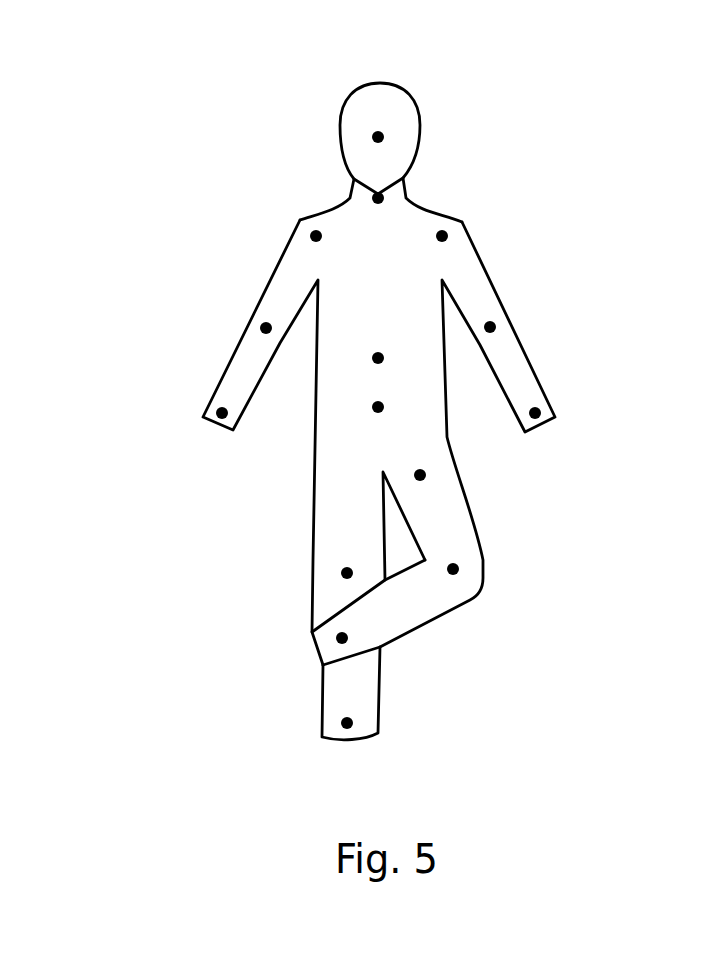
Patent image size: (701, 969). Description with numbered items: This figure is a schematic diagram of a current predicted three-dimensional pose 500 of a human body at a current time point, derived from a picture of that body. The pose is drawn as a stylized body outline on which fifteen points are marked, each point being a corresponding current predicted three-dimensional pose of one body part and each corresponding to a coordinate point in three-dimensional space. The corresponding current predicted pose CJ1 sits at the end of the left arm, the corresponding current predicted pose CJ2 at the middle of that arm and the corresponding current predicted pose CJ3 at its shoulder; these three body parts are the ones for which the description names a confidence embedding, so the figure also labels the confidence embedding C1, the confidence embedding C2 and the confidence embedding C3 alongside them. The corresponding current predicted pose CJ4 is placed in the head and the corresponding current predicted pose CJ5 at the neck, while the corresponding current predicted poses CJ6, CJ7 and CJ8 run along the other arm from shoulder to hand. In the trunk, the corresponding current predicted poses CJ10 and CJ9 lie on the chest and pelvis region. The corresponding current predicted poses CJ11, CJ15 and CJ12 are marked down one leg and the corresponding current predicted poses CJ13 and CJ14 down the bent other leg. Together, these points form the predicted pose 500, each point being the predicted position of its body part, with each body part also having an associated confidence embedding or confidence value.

The current predicted 3D pose 500 is at (162, 66).
The corresponding current predicted 3D pose CJ1 is at (222, 413).
The confidence embedding C1 is at (137, 398).
The corresponding current predicted 3D pose CJ2 is at (266, 328).
The confidence embedding C2 is at (181, 308).
The corresponding current predicted 3D pose CJ3 is at (316, 236).
The confidence embedding C3 is at (233, 219).
The corresponding current predicted 3D pose CJ4 is at (378, 137).
The corresponding current predicted 3D pose CJ5 is at (388, 198).
The corresponding current predicted 3D pose CJ6 is at (442, 236).
The corresponding current predicted 3D pose CJ7 is at (490, 327).
The corresponding current predicted 3D pose CJ8 is at (535, 413).
The corresponding current predicted 3D pose CJ9 is at (378, 407).
The corresponding current predicted 3D pose CJ10 is at (378, 358).
The corresponding current predicted 3D pose CJ11 is at (347, 573).
The corresponding current predicted 3D pose CJ12 is at (347, 723).
The corresponding current predicted 3D pose CJ13 is at (420, 475).
The corresponding current predicted 3D pose CJ14 is at (453, 569).
The corresponding current predicted 3D pose CJ15 is at (342, 638).